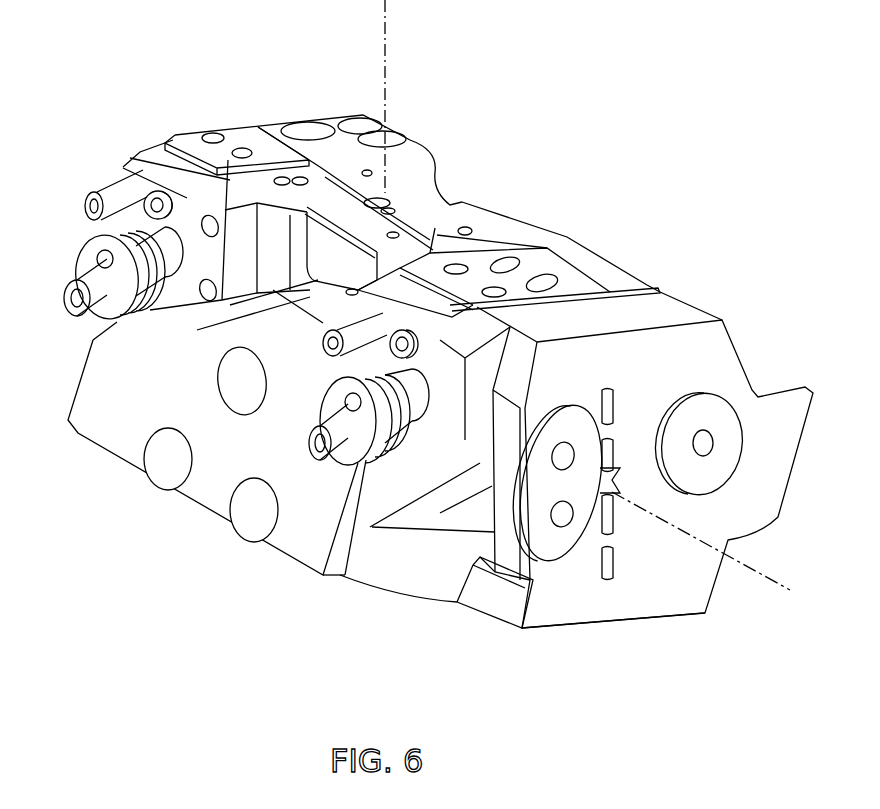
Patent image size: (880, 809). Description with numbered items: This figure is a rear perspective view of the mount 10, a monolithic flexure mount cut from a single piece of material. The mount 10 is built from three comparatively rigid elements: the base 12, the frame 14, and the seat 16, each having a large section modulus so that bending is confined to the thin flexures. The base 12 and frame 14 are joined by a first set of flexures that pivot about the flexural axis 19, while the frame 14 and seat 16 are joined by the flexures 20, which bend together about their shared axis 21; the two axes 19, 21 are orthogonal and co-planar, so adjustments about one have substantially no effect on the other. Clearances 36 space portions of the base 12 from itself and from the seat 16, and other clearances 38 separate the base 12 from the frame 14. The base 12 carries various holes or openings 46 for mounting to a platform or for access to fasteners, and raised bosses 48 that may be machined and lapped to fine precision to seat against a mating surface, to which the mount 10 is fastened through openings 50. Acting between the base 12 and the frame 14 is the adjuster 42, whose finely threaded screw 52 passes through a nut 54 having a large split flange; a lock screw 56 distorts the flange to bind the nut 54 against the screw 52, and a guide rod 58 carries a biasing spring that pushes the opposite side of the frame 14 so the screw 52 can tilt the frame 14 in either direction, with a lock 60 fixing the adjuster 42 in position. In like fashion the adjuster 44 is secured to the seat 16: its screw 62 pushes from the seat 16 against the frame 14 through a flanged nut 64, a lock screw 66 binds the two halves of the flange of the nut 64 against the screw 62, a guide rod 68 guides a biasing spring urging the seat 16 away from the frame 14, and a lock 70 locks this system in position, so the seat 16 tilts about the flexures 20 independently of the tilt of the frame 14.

The mount 10 is at (165, 103).
The base 12 is at (327, 511).
The frame 14 is at (417, 189).
The seat 16 is at (347, 214).
The flexural axis 19 is at (760, 577).
The flexures 20 is at (366, 198).
The axis 21 is at (386, 22).
The clearances 36 is at (640, 283).
The clearances 38 is at (435, 228).
The adjuster 42 is at (364, 468).
The adjuster 44 is at (62, 283).
The openings 46 is at (153, 460).
The bosses 48 is at (548, 555).
The openings 50 is at (713, 438).
The screw 52 is at (313, 442).
The nut 54 is at (398, 447).
The lock screw 56 is at (347, 400).
The guide rod 58 is at (320, 342).
The lock 60 is at (410, 347).
The screw 62 is at (72, 300).
The flanged nut 64 is at (85, 247).
The lock screw 66 is at (87, 255).
The guide rod 68 is at (95, 190).
The lock 70 is at (174, 214).